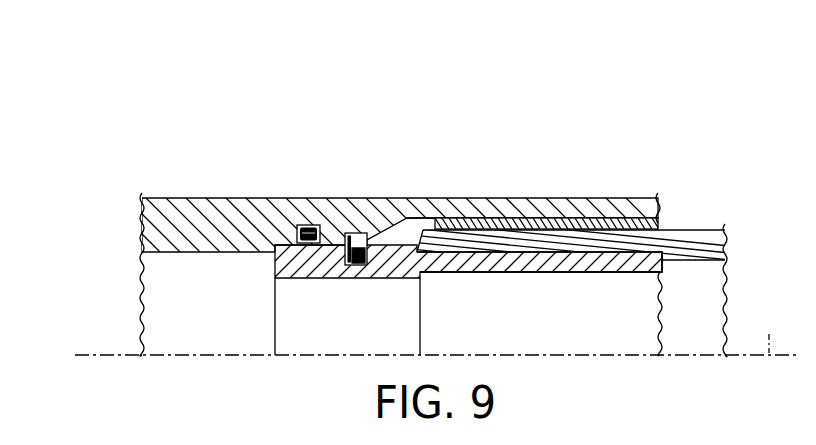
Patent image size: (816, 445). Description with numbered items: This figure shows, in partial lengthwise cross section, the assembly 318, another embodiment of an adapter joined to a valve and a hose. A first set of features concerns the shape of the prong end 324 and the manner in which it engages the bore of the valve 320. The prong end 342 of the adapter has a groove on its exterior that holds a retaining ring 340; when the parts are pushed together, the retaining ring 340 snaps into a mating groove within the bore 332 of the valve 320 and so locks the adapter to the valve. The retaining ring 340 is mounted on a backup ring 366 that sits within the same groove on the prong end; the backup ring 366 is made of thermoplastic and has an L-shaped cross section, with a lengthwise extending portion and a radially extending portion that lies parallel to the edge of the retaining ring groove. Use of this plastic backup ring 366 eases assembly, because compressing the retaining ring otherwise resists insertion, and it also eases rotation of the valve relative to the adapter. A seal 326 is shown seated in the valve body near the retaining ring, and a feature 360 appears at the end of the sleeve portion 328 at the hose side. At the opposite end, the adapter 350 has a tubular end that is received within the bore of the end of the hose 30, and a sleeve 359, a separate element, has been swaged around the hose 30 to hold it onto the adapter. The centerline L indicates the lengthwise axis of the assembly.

The assembly 318 is at (537, 112).
The valve 320 is at (247, 186).
The prong end 324 is at (461, 198).
The seal 326 is at (314, 224).
The retaining ring 340 is at (350, 233).
The backup ring 366 is at (355, 267).
The prong end of the adapter 342 is at (309, 271).
The adapter 350 is at (462, 281).
The inner sleeve 328 is at (537, 271).
The sleeve 359 is at (566, 219).
The hose 30 is at (693, 233).
The bore 332 is at (140, 311).
The sleeve end 360 is at (643, 275).
The longitudinal axis L is at (768, 329).